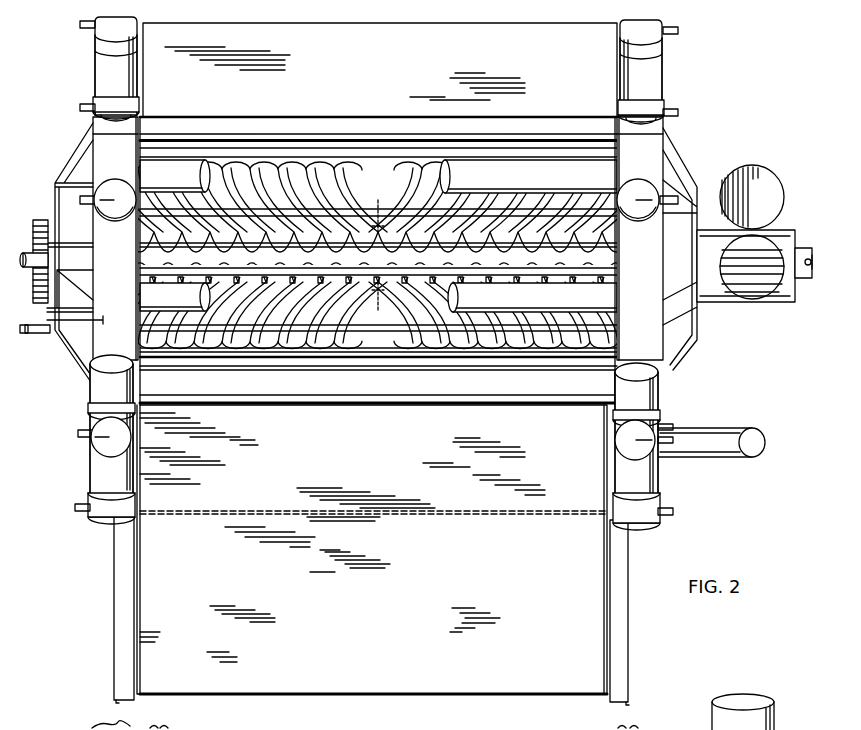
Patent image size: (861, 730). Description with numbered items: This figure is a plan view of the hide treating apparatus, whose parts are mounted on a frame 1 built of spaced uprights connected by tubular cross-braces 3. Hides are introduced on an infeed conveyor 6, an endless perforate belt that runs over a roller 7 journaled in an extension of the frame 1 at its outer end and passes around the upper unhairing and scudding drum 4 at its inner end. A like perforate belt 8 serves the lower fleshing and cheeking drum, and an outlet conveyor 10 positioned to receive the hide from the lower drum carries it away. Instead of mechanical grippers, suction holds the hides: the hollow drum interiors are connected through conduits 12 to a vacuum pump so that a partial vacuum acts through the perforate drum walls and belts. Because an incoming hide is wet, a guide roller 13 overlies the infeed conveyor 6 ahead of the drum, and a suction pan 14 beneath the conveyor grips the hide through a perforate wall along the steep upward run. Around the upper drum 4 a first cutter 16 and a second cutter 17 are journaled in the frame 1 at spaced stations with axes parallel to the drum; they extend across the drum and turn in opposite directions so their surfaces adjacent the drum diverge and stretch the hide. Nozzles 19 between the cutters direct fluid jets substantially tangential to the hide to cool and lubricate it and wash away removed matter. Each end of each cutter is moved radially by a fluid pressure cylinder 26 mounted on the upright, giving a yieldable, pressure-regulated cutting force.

The frame 1 is at (688, 153).
The cross-braces 3 is at (361, 117).
The upper drum 4 is at (362, 13).
The infeed conveyor 6 is at (399, 614).
The roller 7 is at (147, 663).
The belt 8 is at (252, 157).
The outlet conveyor 10 is at (386, 78).
The conduits 12 is at (755, 165).
The guide roller 13 is at (302, 360).
The suction pan 14 is at (432, 515).
The first cutter 16 is at (345, 347).
The second cutter 17 is at (340, 165).
The nozzles 19 is at (475, 282).
The fluid pressure cylinder 26 is at (98, 66).